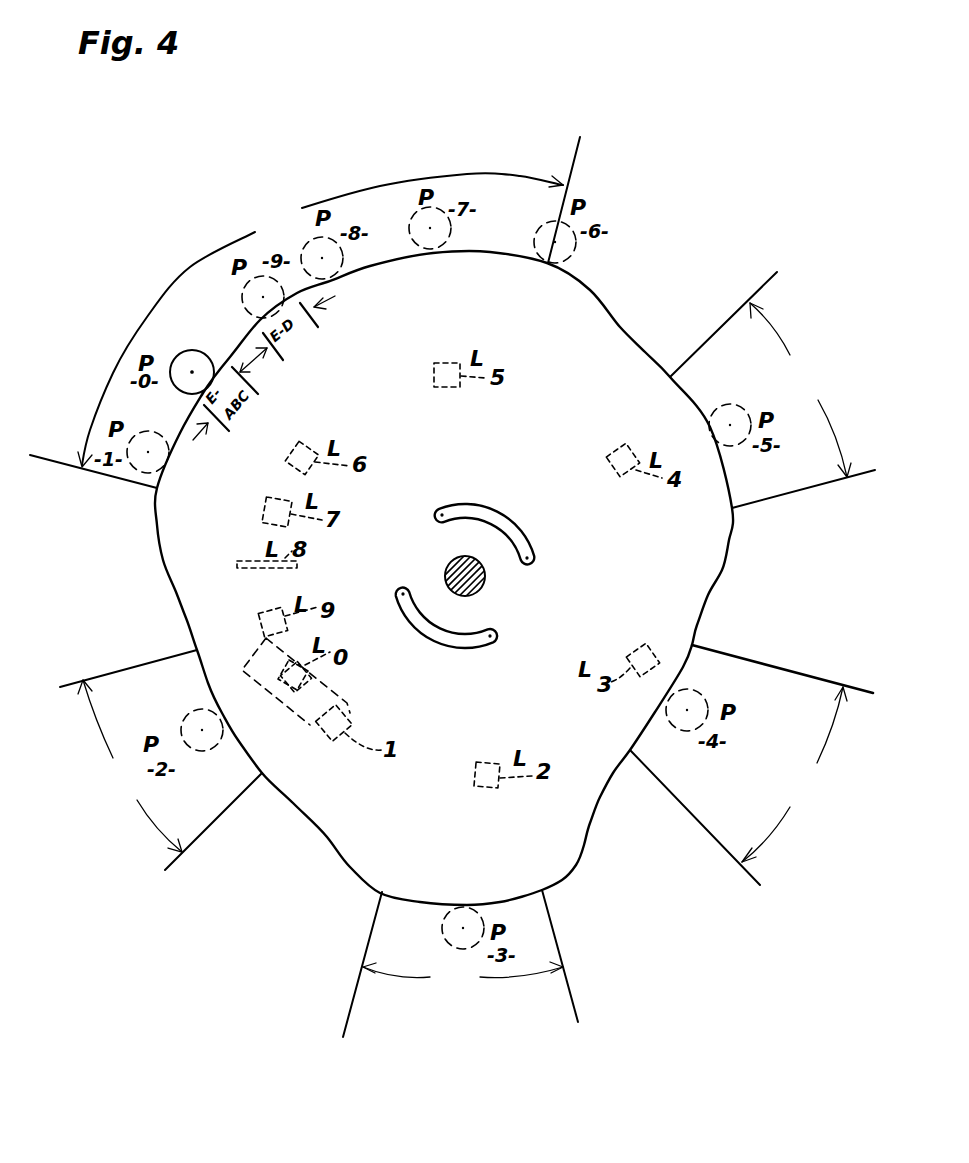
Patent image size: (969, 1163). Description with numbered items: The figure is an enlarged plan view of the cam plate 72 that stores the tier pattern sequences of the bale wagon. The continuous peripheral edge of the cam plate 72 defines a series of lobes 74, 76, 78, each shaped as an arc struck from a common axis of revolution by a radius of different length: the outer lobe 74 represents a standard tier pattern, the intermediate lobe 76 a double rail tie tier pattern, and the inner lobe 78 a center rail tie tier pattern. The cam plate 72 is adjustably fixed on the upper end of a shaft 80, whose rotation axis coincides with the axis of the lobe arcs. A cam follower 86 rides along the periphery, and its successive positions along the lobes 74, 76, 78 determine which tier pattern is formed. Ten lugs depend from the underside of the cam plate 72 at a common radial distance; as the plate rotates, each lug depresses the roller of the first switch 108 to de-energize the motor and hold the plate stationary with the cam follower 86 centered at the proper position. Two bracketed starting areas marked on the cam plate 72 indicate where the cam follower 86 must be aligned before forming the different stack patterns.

The cam plate 72 is at (444, 578).
The lobe 74 is at (305, 587).
The lobe 76 is at (467, 571).
The lobe 78 is at (751, 765).
The shaft 80 is at (486, 579).
The cam follower 86 is at (200, 350).
The first switch 108 is at (335, 679).